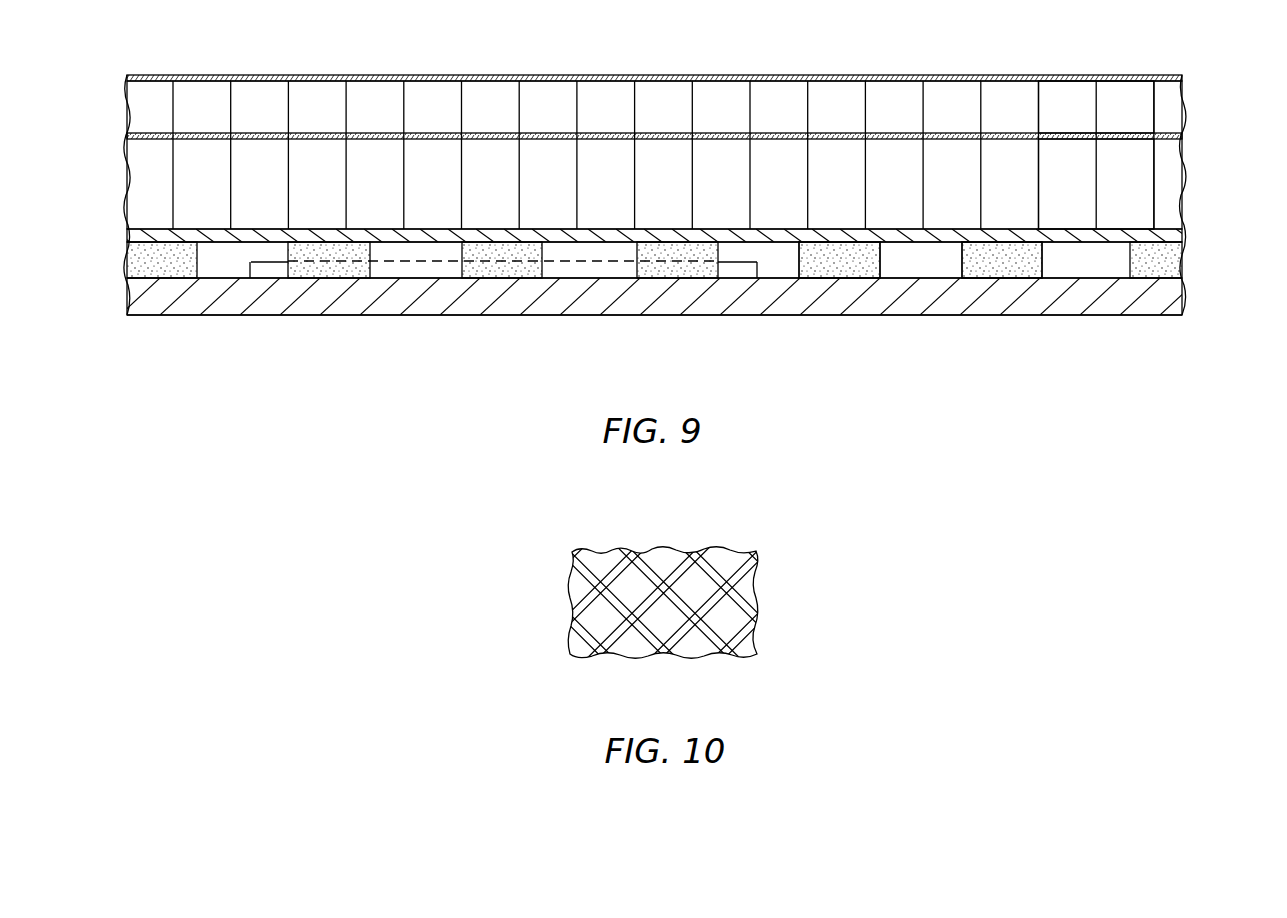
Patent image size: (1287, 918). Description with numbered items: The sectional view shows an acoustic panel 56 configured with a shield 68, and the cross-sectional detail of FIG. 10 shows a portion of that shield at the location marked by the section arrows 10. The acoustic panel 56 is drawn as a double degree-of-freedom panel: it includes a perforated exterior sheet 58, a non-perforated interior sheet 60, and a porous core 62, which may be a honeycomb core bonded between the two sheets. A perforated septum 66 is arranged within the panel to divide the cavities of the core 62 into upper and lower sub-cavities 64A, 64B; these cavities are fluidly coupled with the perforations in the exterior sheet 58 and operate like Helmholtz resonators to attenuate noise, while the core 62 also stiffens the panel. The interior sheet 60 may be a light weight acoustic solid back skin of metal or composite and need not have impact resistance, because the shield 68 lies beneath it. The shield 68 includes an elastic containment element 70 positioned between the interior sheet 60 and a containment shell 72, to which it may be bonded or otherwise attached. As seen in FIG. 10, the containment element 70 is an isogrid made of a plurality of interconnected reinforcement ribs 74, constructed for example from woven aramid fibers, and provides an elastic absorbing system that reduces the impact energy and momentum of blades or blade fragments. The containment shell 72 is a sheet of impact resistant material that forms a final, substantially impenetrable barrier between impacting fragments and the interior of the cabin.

In FIG. 9, the electrode / conductive trace 10 is at (757, 349).
In FIG. 9, the acoustic panel 56 is at (96, 78).
In FIG. 9, the perforated exterior sheet 58 is at (1180, 76).
In FIG. 9, the interior sheet 60 is at (1185, 237).
In FIG. 9, the porous core 62 is at (1186, 118).
In FIG. 9, the sub-cavity 64A is at (1144, 117).
In FIG. 9, the sub-cavity 64B is at (1144, 190).
In FIG. 9, the perforated septum 66 is at (1183, 135).
In FIG. 9, the shield 68 is at (96, 248).
In FIG. 9, the elastic containment element 70 is at (1185, 260).
In FIG. 10, the elastic containment element 70 is at (708, 587).
In FIG. 9, the containment shell 72 is at (1185, 298).
In FIG. 9, the reinforcement ribs 74 is at (865, 260).
In FIG. 10, the reinforcement ribs 74 is at (832, 528).